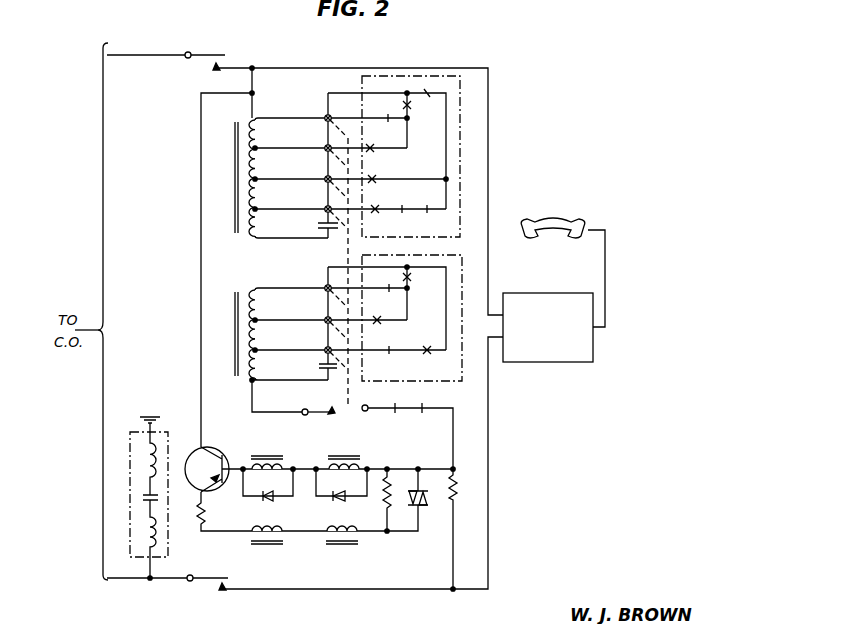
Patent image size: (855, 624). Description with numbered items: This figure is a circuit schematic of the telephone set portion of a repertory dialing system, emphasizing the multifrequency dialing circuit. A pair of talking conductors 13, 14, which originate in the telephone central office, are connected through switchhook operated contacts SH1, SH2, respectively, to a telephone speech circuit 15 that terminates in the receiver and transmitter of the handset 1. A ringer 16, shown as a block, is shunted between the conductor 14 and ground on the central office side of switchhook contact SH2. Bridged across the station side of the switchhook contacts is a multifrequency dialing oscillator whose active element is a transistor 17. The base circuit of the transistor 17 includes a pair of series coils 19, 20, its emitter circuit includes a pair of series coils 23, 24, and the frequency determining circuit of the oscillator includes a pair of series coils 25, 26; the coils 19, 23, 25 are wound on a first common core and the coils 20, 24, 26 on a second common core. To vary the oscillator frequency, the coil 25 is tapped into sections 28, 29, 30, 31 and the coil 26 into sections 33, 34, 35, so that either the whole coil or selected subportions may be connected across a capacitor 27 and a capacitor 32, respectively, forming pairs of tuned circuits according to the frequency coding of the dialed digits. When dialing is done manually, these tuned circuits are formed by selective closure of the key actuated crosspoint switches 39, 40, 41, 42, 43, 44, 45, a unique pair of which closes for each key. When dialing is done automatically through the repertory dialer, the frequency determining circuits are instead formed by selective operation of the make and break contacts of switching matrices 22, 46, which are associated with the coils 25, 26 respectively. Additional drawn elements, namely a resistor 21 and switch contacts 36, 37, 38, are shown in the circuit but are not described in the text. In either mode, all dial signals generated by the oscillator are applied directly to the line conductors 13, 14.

The handset 1 is at (557, 216).
The talking conductor 13 is at (151, 54).
The talking conductor 14 is at (167, 582).
The telephone speech circuit 15 is at (540, 292).
The ringer 16 is at (128, 455).
The transistor 17 is at (231, 439).
The coil 19 is at (262, 455).
The coil 20 is at (330, 457).
The resistor 21 is at (459, 487).
The switching matrix 22 is at (460, 113).
The coil 23 is at (287, 537).
The coil 24 is at (359, 537).
The coil 25 is at (233, 191).
The coil 26 is at (235, 348).
The capacitor 27 is at (319, 225).
The coil section 28 is at (256, 131).
The coil section 29 is at (256, 163).
The coil section 30 is at (256, 194).
The coil section 31 is at (258, 225).
The capacitor 32 is at (319, 366).
The coil section 33 is at (256, 303).
The coil section 34 is at (257, 337).
The coil section 35 is at (256, 367).
The switch contact 36 is at (347, 410).
The switch contact 37 is at (396, 413).
The switch contact 38 is at (425, 413).
The crosspoint switch 39 is at (325, 116).
The crosspoint switch 40 is at (325, 146).
The crosspoint switch 41 is at (325, 177).
The crosspoint switch 42 is at (325, 207).
The crosspoint switch 43 is at (325, 286).
The crosspoint switch 44 is at (325, 318).
The crosspoint switch 45 is at (325, 348).
The switching matrix 46 is at (462, 350).
The switchhook operated contact SH1 is at (208, 52).
The switchhook operated contact SH2 is at (210, 583).